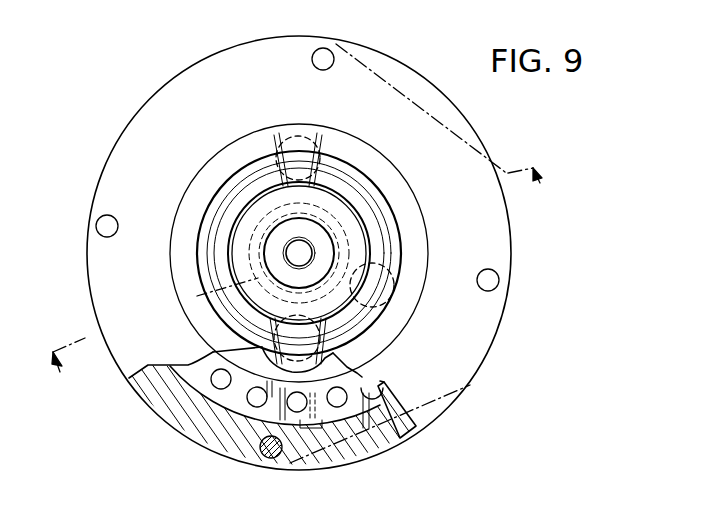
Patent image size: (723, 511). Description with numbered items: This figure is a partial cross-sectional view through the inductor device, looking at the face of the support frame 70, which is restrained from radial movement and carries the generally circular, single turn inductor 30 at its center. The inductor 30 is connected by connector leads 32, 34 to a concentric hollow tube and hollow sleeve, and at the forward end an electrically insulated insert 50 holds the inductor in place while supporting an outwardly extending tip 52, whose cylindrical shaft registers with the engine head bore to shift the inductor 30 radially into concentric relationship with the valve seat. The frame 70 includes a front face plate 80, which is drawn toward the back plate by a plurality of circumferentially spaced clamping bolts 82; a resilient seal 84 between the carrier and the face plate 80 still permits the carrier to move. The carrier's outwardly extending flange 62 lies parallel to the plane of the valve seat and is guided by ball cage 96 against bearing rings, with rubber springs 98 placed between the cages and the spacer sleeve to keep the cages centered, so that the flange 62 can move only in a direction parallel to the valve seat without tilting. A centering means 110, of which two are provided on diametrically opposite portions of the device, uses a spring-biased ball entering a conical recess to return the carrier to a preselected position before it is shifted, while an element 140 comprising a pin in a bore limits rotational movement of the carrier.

The support frame 70 is at (136, 112).
The face plate 80 is at (221, 78).
The clamping bolts 82 is at (325, 49).
The seal 84 is at (393, 246).
The inductor 30 is at (352, 201).
The connector lead 32 is at (284, 229).
The connector lead 34 is at (256, 284).
The electrically insulated insert 50 is at (356, 245).
The tip 52 is at (307, 244).
The flange 62 is at (350, 373).
The ball cage 96 is at (399, 440).
The rubber springs 98 is at (336, 430).
The centering means 110 is at (315, 166).
The element 140 is at (394, 292).